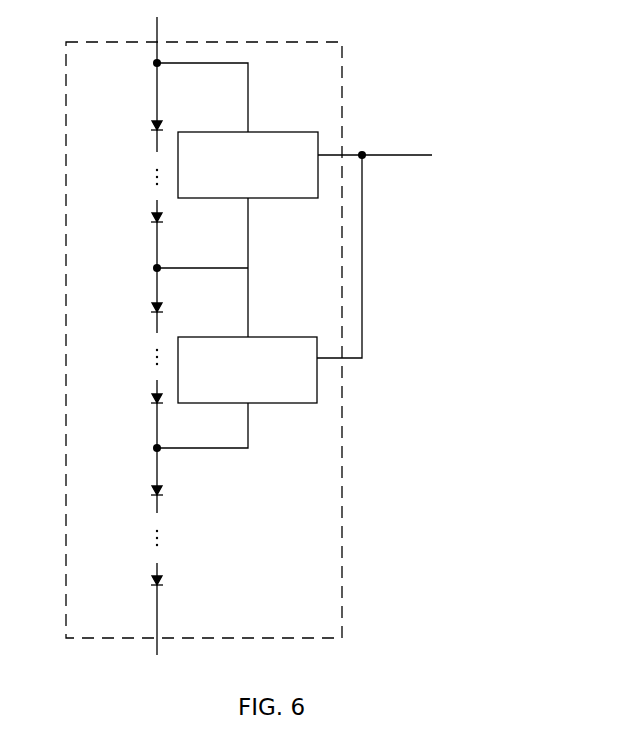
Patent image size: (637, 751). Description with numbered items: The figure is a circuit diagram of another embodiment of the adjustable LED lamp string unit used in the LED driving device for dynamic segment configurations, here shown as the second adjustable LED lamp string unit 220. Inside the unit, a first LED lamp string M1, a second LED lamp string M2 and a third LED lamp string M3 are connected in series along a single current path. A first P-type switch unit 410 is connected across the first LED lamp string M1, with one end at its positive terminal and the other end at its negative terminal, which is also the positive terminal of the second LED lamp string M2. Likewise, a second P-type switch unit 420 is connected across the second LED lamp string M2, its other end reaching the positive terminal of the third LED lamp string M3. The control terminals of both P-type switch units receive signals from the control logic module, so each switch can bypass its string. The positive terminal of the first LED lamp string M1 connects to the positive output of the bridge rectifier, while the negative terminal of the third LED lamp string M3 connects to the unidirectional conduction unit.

The second adjustable LED lamp string unit 220 is at (350, 87).
The first P-type switch unit 410 is at (276, 126).
The second P-type switch unit 420 is at (300, 332).
The first LED lamp string M1 is at (150, 87).
The second LED lamp string M2 is at (150, 282).
The third LED lamp string M3 is at (150, 465).